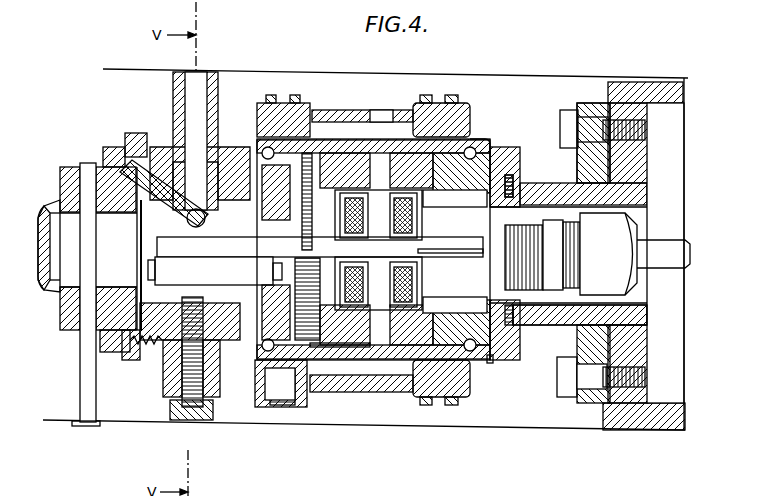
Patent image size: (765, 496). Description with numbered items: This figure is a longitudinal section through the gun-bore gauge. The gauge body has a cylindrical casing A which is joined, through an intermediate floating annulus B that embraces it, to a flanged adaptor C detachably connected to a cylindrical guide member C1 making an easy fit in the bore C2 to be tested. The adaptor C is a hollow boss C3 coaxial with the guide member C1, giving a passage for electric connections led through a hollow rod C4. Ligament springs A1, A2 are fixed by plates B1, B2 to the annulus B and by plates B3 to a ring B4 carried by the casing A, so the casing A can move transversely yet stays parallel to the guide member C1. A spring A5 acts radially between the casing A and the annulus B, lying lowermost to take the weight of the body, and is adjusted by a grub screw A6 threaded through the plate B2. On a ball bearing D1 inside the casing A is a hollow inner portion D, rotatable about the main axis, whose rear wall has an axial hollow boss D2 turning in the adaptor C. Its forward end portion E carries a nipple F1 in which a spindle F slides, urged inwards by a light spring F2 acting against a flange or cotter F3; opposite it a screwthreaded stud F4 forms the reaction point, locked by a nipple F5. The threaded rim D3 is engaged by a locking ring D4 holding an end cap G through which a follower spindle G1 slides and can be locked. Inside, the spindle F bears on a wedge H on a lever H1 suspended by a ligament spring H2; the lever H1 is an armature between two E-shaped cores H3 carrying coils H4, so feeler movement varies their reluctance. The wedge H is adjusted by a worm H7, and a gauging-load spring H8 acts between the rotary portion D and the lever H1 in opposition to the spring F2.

The cylindrical casing A is at (489, 137).
The ligament spring A1 is at (376, 108).
The ligament spring A2 is at (363, 388).
The spring A5 is at (308, 408).
The grub screw A6 is at (283, 408).
The intermediate floating annulus B is at (296, 150).
The plate B1 is at (287, 102).
The plate B2 is at (261, 412).
The plate B3 is at (465, 102).
The ring B4 is at (478, 125).
The flanged adaptor C is at (534, 320).
The cylindrical guide member C1 is at (633, 82).
The bore C2 is at (665, 82).
The hollow boss C3 is at (437, 253).
The hollow rod C4 is at (660, 247).
The hollow inner portion D is at (496, 162).
The ball bearing D1 is at (488, 364).
The axial hollow boss D2 is at (516, 203).
The rim D3 is at (110, 338).
The locking ring D4 is at (131, 360).
The forward end portion E is at (142, 155).
The spindle F is at (208, 74).
The nipple F1 is at (172, 92).
The light spring F2 is at (158, 150).
The flange or cotter F3 is at (102, 165).
The screwthreaded stud F4 is at (192, 420).
The nipple F5 is at (172, 395).
The end cap G is at (62, 327).
The follower spindle G1 is at (82, 410).
The wedge H is at (180, 229).
The lever H1 is at (294, 246).
The ligament spring H2 is at (510, 174).
The E-shaped core H3 is at (375, 217).
The coil H4 is at (376, 270).
The worm H7 is at (183, 272).
The gauging-load spring H8 is at (338, 346).